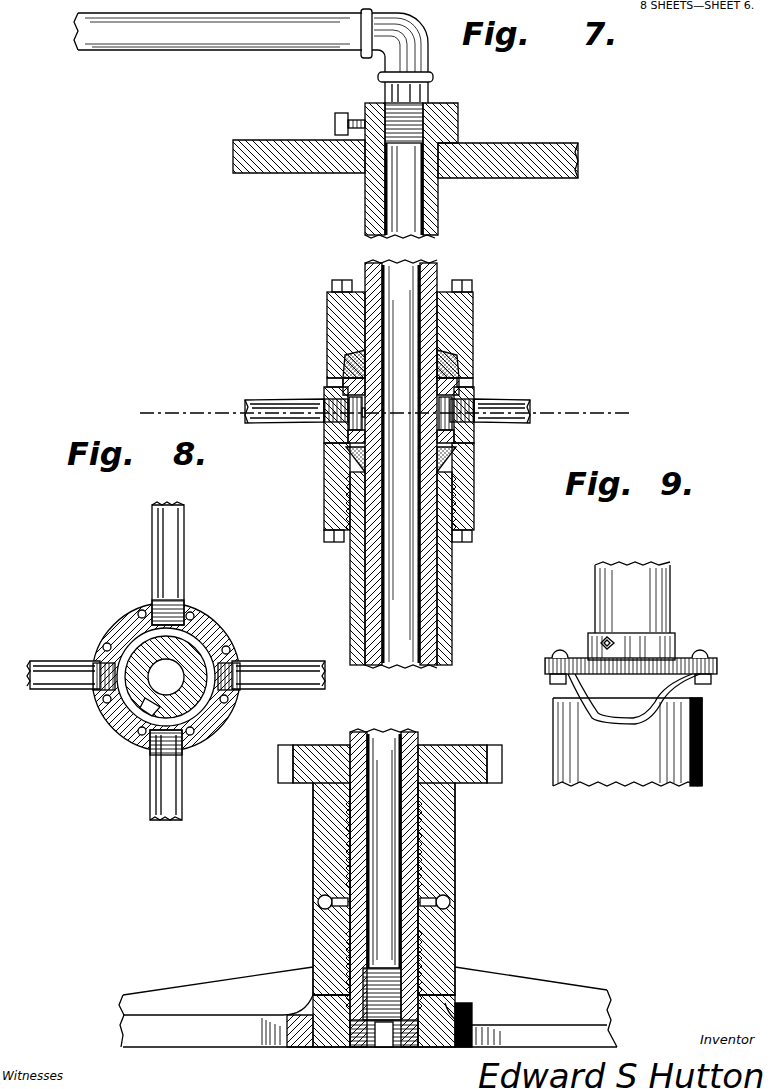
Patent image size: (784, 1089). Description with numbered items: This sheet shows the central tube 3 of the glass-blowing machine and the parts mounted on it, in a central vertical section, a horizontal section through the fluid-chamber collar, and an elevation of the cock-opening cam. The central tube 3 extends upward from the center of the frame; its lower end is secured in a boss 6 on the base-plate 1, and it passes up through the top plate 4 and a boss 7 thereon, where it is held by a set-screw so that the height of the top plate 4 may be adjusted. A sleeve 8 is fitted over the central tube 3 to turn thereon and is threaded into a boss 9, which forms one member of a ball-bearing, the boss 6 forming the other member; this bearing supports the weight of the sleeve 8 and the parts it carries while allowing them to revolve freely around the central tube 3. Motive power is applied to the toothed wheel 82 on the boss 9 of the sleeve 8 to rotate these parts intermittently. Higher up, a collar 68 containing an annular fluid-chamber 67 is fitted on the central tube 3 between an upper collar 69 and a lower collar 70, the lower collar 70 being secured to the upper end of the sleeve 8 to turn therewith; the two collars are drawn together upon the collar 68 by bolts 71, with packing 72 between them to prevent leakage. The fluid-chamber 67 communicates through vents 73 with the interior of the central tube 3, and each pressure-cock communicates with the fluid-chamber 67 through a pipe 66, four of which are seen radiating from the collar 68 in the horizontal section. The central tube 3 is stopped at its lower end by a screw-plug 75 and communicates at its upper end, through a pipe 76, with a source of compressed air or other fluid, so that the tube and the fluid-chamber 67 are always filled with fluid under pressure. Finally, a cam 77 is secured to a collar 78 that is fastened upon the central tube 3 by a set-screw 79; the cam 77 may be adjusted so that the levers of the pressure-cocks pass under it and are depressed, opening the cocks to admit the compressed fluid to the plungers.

In FIG. 7, the base-plate 1 is at (600, 1040).
In FIG. 7, the central tube 3 is at (438, 217).
In FIG. 8, the central tube 3 is at (128, 706).
In FIG. 9, the central tube 3 is at (660, 589).
In FIG. 7, the top plate 4 is at (578, 160).
In FIG. 7, the boss 6 is at (440, 931).
In FIG. 7, the boss 7 is at (458, 128).
In FIG. 7, the sleeve 8 is at (443, 720).
In FIG. 7, the boss 9 is at (320, 843).
In FIG. 7, the pipe 66 is at (502, 400).
In FIG. 8, the pipe 66 is at (176, 548).
In FIG. 7, the fluid-chamber 67 is at (340, 432).
In FIG. 8, the fluid-chamber 67 is at (150, 718).
In FIG. 7, the collar 68 is at (325, 395).
In FIG. 8, the collar 68 is at (100, 707).
In FIG. 7, the upper collar 69 is at (460, 320).
In FIG. 9, the upper collar 69 is at (652, 773).
In FIG. 7, the lower collar 70 is at (463, 495).
In FIG. 7, the bolts 71 is at (340, 283).
In FIG. 8, the bolts 71 is at (105, 643).
In FIG. 7, the packing 72 is at (345, 357).
In FIG. 7, the vents 73 is at (452, 402).
In FIG. 8, the vents 73 is at (180, 652).
In FIG. 7, the screw-plug 75 is at (376, 1030).
In FIG. 7, the pipe 76 is at (215, 49).
In FIG. 9, the cam 77 is at (650, 713).
In FIG. 9, the collar 78 is at (590, 640).
In FIG. 9, the set-screw 79 is at (601, 638).
In FIG. 7, the toothed wheel 82 is at (480, 784).